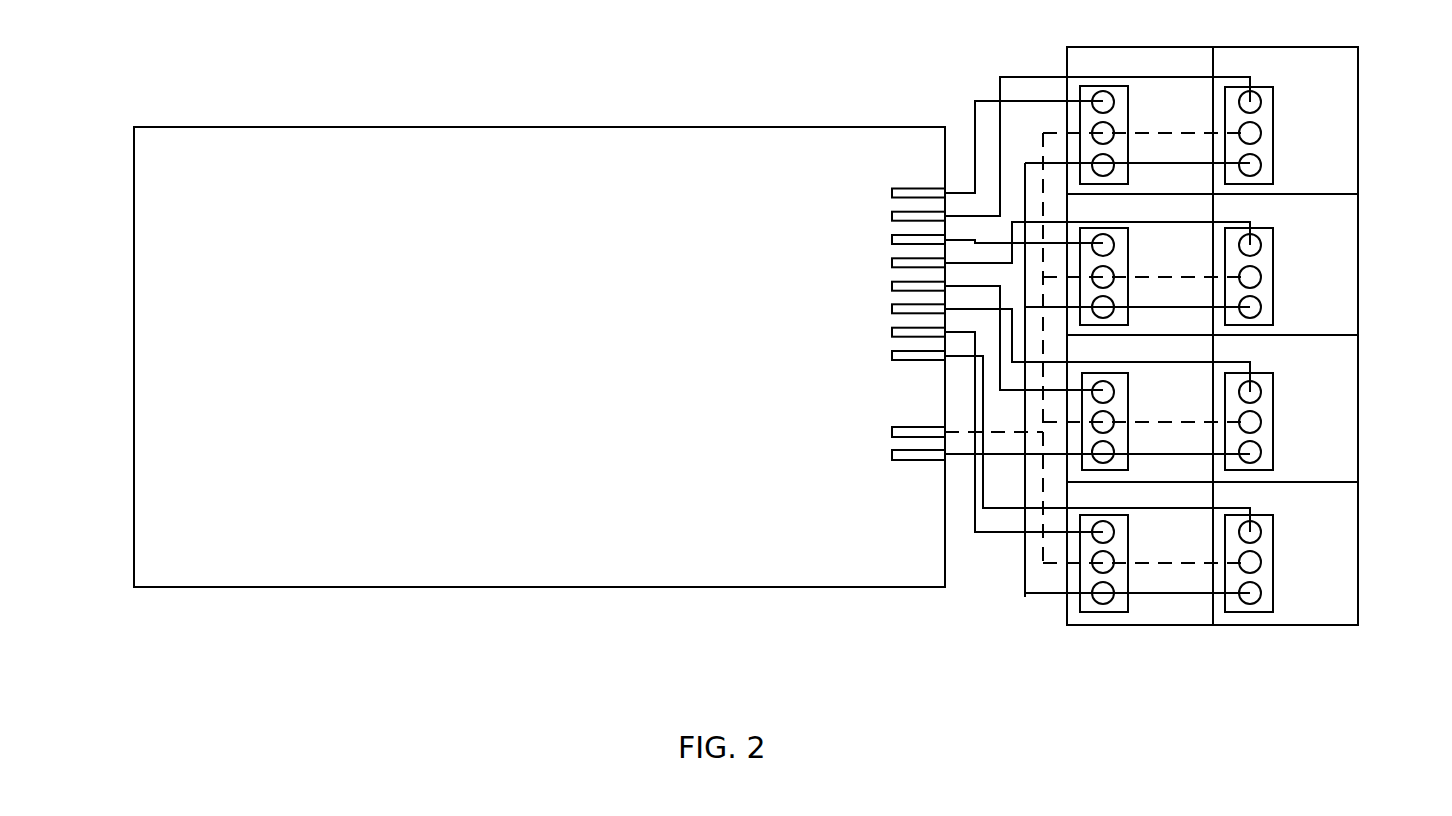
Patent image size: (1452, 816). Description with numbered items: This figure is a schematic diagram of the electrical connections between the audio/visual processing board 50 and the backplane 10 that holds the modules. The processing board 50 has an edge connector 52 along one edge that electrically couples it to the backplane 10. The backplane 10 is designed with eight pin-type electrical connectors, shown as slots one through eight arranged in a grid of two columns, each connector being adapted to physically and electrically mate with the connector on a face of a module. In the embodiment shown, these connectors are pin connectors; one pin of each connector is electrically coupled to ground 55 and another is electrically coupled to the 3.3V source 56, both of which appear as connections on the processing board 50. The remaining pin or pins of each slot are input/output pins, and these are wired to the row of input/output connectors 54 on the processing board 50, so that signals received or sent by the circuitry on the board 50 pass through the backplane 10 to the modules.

The backplane 10 is at (1348, 63).
The electrical audio/visual processing board 50 is at (477, 147).
The edge connector 52 is at (947, 566).
The input/output connectors 54 is at (875, 173).
The ground 55 is at (827, 428).
The 3.3V source 56 is at (827, 455).